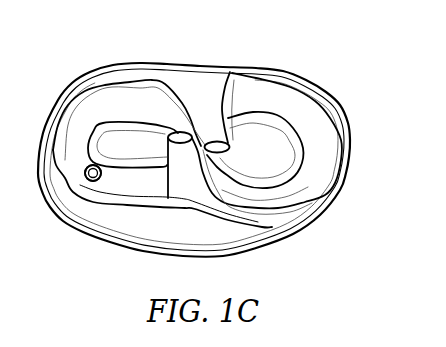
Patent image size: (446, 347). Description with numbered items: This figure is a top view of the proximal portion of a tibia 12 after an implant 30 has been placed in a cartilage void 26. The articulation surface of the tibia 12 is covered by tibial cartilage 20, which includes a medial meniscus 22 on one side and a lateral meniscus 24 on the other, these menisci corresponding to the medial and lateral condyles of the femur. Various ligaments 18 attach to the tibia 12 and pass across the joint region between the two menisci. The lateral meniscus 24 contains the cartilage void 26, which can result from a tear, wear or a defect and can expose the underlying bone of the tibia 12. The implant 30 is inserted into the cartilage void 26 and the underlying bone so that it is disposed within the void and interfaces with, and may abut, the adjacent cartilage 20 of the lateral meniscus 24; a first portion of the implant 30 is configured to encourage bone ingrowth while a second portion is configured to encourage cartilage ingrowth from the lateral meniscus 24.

The tibia 12 is at (114, 52).
The ligaments 18 is at (206, 80).
The tibial cartilage 20 is at (304, 50).
The medial meniscus 22 is at (316, 170).
The lateral meniscus 24 is at (93, 119).
The cartilage void 26 is at (81, 188).
The implant 30 is at (77, 163).